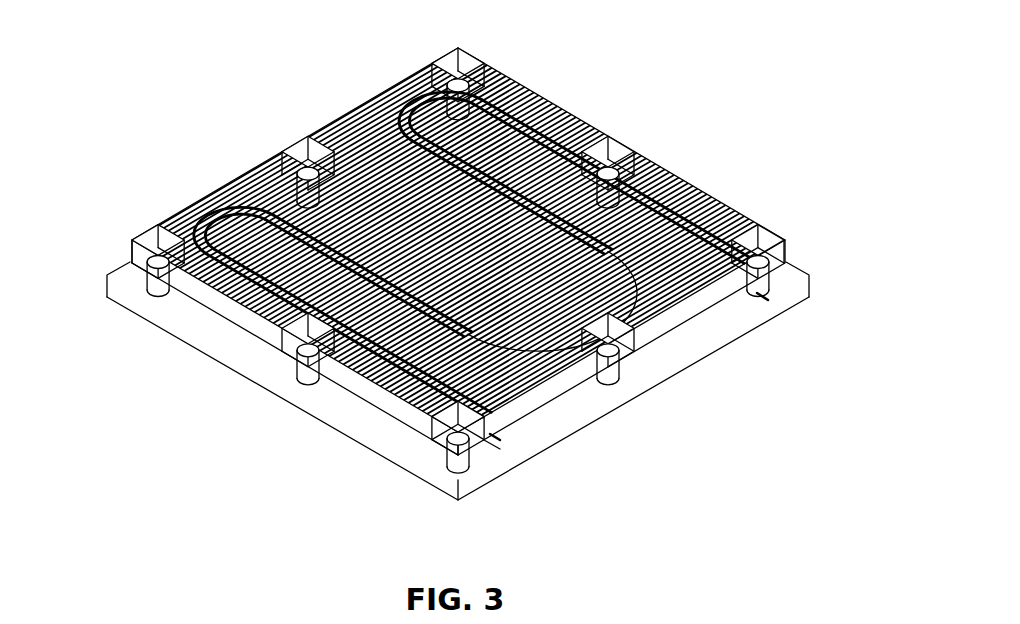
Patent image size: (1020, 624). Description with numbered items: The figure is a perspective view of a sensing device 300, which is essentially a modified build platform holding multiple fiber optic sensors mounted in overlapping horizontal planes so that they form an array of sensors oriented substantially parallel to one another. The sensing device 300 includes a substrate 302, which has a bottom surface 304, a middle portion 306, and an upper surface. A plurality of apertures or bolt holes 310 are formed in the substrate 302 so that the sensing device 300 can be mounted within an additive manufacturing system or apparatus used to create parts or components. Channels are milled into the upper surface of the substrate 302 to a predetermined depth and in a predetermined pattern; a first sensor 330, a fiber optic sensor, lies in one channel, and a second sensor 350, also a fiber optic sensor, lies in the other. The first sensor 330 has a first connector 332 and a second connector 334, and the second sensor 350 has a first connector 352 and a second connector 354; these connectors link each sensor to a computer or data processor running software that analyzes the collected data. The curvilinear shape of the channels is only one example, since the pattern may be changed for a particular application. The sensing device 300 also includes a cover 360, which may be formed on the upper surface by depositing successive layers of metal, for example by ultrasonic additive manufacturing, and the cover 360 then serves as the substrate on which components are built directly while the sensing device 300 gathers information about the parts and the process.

The sensing device 300 is at (310, 72).
The substrate 302 is at (252, 178).
The bottom surface 304 is at (158, 323).
The middle portion 306 is at (235, 345).
The apertures or bolt holes 310 is at (462, 68).
The first sensor 330 is at (675, 208).
The first connector 332 is at (502, 440).
The second connector 334 is at (795, 287).
The second sensor 350 is at (190, 264).
The first connector 352 is at (503, 438).
The second connector 354 is at (768, 300).
The cover 360 is at (522, 112).